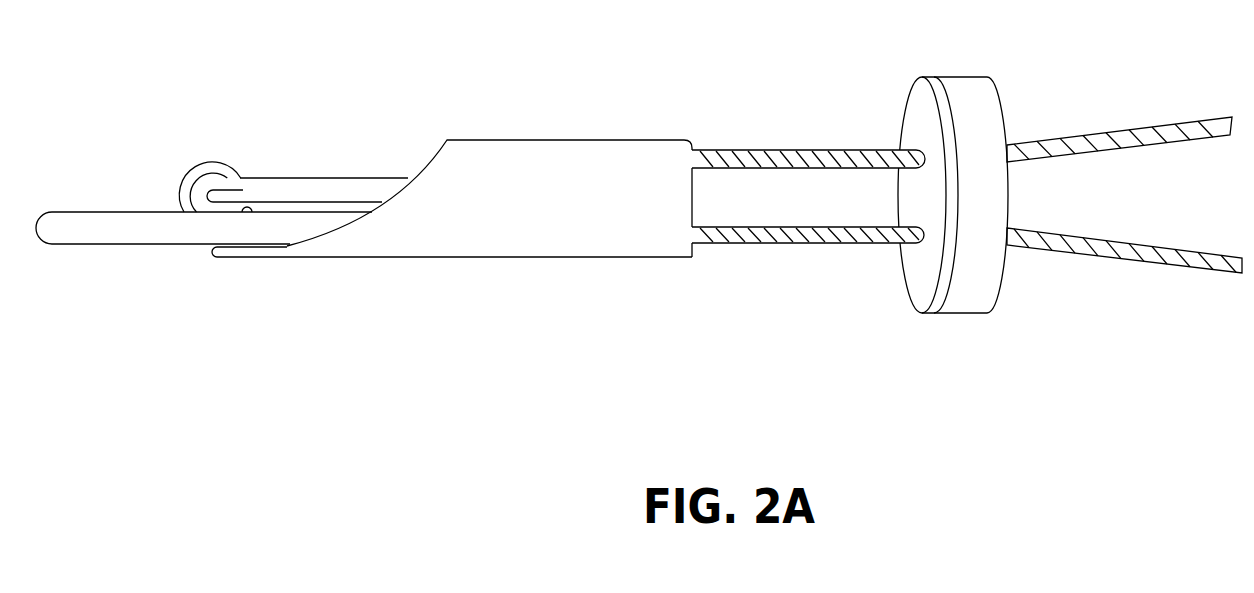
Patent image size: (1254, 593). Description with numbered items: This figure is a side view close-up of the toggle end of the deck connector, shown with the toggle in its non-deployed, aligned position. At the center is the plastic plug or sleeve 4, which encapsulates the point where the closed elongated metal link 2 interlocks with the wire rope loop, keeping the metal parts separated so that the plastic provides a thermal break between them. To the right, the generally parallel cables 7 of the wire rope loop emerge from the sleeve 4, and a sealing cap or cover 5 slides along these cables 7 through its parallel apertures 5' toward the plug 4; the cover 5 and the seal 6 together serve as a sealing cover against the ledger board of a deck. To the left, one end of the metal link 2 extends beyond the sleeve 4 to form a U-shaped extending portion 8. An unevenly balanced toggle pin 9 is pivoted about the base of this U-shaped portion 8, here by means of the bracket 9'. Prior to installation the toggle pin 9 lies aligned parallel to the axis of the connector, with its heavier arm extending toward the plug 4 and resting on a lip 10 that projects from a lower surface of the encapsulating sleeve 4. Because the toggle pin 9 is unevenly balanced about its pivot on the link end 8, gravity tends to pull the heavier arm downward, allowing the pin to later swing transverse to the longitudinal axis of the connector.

The elongated metal link 2 is at (305, 177).
The plastic plug or sleeve 4 is at (560, 139).
The sealing cap or cover 5 is at (1082, 171).
The parallel apertures 5' is at (887, 200).
The seal 6 is at (933, 78).
The parallel cables 7 is at (813, 150).
The U-shaped extending portion 8 is at (243, 190).
The toggle pin 9 is at (204, 290).
The bracket 9' is at (209, 135).
The lip 10 is at (338, 257).